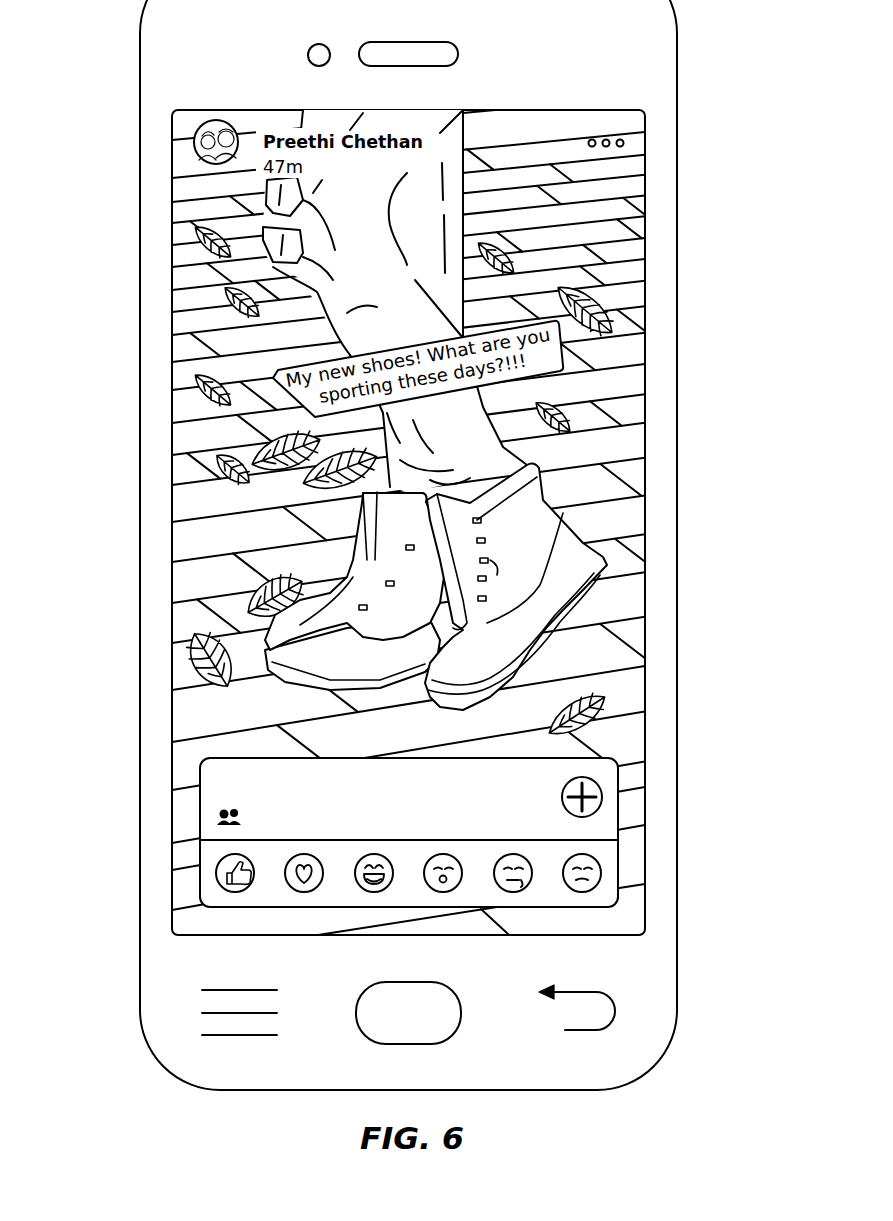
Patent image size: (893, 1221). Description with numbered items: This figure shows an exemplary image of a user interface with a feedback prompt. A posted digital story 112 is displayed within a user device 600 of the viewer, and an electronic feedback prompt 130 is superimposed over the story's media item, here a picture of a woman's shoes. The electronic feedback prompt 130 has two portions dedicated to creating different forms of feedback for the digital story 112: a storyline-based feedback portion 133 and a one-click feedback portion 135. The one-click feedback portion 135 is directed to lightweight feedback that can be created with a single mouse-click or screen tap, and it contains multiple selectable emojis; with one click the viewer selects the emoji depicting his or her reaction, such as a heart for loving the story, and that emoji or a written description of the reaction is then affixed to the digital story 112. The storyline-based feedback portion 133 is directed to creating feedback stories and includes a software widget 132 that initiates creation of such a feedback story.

The user device 600 is at (138, 115).
The posted digital story 112 is at (172, 280).
The electronic feedback prompt 130 is at (356, 748).
The software widget 132 is at (597, 782).
The storyline-based feedback portion 133 is at (608, 782).
The one-click feedback portion 135 is at (607, 853).